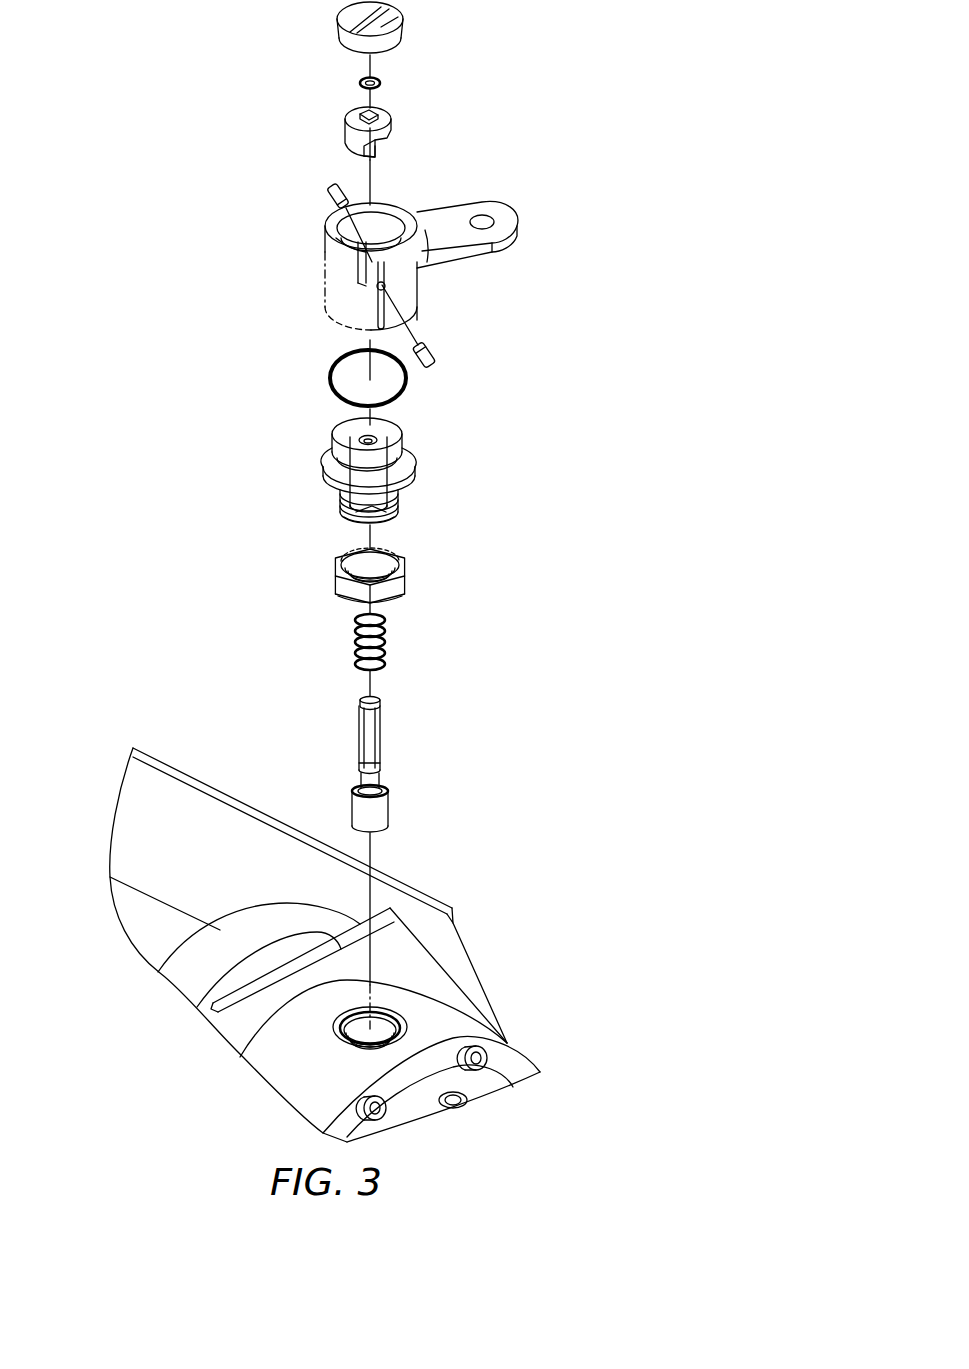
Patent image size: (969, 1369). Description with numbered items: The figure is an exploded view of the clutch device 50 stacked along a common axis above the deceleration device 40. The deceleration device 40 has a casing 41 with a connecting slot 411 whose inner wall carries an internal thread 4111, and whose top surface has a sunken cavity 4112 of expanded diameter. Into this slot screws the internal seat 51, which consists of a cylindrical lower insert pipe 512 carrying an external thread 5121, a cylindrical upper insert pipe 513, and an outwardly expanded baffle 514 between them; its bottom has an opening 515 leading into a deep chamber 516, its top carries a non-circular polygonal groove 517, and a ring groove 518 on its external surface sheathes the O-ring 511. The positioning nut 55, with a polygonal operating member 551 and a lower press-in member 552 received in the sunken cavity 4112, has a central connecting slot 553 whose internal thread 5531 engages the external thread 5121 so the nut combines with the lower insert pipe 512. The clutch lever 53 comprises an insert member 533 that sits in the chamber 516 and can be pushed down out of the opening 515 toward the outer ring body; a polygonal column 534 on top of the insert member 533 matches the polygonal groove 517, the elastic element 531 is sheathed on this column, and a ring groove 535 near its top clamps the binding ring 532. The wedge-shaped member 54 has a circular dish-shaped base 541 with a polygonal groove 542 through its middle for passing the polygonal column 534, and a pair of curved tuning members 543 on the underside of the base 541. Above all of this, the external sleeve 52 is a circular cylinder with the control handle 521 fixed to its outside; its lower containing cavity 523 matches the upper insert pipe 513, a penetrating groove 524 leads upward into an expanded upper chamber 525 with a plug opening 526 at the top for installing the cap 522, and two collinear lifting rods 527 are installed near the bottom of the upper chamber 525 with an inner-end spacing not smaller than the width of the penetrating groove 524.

The deceleration device 40 is at (339, 945).
The casing 41 is at (427, 1027).
The connecting slot 411 is at (453, 936).
The internal thread 4111 is at (363, 1050).
The sunken cavity 4112 is at (333, 1028).
The clutch device 50 is at (472, 392).
The internal seat 51 is at (368, 469).
The O-ring 511 is at (329, 376).
The lower insert pipe 512 is at (399, 506).
The external thread 5121 is at (346, 510).
The upper insert pipe 513 is at (393, 437).
The baffle 514 is at (410, 480).
The opening 515 is at (393, 520).
The chamber 516 is at (372, 478).
The polygonal groove 517 is at (365, 437).
The ring groove 518 is at (342, 462).
The external sleeve 52 is at (385, 266).
The control handle 521 is at (447, 216).
The lower containing cavity 523 is at (373, 307).
The penetrating groove 524 is at (363, 281).
The upper chamber 525 is at (358, 248).
The plug opening 526 is at (382, 224).
The lifting rods 527 is at (325, 188).
The clutch lever 53 is at (365, 761).
The elastic element 531 is at (355, 643).
The binding ring 532 is at (358, 80).
The insert member 533 is at (373, 813).
The polygonal column 534 is at (381, 748).
The ring groove 535 is at (381, 700).
The wedge-shaped member 54 is at (369, 125).
The base 541 is at (385, 119).
The polygonal groove 542 is at (362, 114).
The tuning members 543 is at (358, 151).
The positioning nut 55 is at (374, 578).
The operating member 551 is at (403, 577).
The press-in member 552 is at (395, 598).
The connecting slot 553 is at (357, 557).
The internal thread 5531 is at (405, 557).
The cap 522 is at (380, 26).